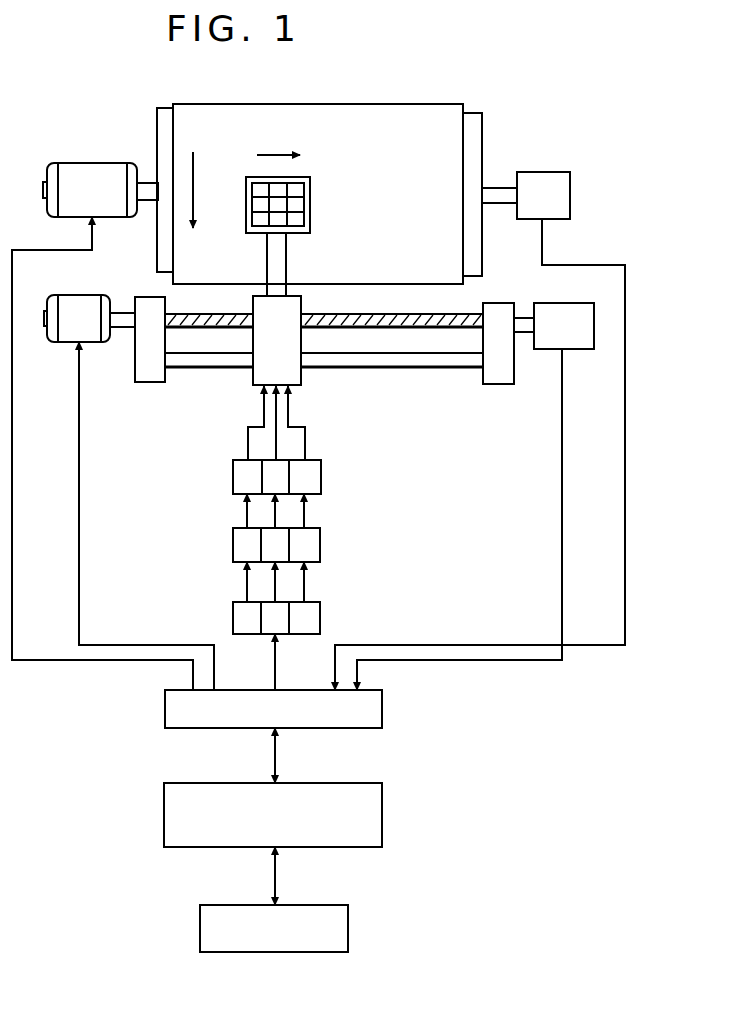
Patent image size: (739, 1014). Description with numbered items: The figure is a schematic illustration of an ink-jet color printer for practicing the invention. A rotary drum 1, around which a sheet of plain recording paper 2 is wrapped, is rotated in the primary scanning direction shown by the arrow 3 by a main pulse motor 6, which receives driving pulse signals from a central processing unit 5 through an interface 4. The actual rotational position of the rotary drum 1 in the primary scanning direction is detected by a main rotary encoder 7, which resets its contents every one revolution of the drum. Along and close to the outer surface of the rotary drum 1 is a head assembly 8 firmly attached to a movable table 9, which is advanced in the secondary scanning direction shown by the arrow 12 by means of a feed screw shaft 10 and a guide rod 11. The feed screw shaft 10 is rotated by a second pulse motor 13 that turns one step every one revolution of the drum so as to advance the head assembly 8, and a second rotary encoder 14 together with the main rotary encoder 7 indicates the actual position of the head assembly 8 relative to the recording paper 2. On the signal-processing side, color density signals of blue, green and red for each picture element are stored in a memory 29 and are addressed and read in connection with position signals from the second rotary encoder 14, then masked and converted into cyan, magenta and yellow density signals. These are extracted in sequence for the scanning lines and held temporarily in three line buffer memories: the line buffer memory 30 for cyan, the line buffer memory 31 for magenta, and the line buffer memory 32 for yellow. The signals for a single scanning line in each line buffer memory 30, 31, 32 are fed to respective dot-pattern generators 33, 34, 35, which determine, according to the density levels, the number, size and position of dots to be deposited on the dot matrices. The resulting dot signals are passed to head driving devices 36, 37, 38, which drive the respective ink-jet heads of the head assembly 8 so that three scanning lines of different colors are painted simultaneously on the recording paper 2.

The rotary drum 1 is at (483, 133).
The recording paper 2 is at (404, 115).
The arrow 3 is at (193, 196).
The interface 4 is at (165, 710).
The central processing unit 5 is at (370, 828).
The main pulse motor 6 is at (105, 176).
The main rotary encoder 7 is at (553, 182).
The head assembly 8 is at (313, 216).
The movable table 9 is at (296, 373).
The feed screw shaft 10 is at (440, 335).
The guide rod 11 is at (402, 362).
The arrow 12 is at (279, 155).
The second pulse motor 13 is at (95, 300).
The second rotary encoder 14 is at (582, 338).
The memory 29 is at (340, 932).
The line buffer memory 30 is at (312, 618).
The line buffer memory 31 is at (282, 628).
The line buffer memory 32 is at (240, 618).
The dot-pattern generator 33 is at (312, 550).
The dot-pattern generator 34 is at (280, 540).
The dot-pattern generator 35 is at (240, 545).
The head driving device 36 is at (313, 478).
The head driving device 37 is at (272, 468).
The head driving device 38 is at (242, 476).